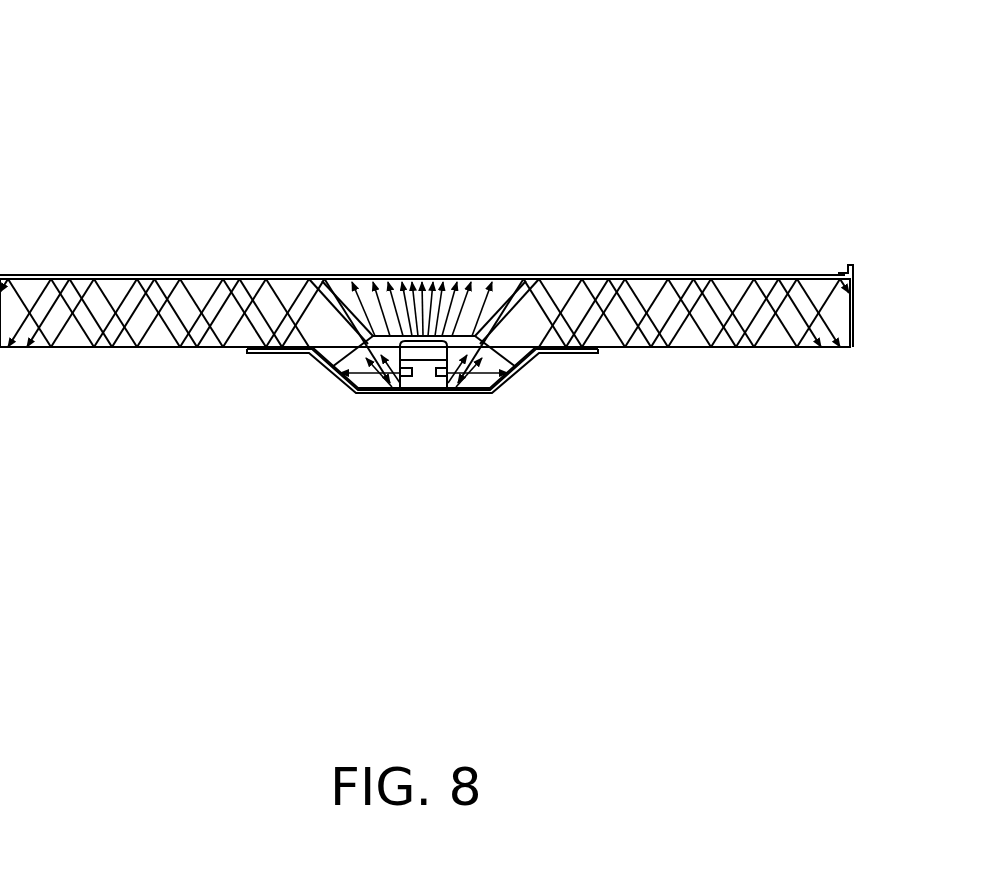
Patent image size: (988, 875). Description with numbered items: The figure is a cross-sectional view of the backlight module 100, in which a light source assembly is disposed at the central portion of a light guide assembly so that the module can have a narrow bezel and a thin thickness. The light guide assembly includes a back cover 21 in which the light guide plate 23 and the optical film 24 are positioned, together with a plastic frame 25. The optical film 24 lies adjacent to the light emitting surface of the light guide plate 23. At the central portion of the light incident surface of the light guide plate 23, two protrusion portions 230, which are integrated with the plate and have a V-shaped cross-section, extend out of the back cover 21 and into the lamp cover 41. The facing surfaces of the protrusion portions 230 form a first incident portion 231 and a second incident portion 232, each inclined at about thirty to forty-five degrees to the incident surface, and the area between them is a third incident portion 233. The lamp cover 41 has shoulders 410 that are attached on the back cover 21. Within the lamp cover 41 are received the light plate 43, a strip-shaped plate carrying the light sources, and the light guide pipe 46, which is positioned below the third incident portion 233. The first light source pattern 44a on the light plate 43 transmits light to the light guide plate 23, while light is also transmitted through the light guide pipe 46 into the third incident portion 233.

The backlight module 100 is at (226, 58).
The back cover 21 is at (778, 348).
The optical film 24 is at (702, 277).
The plastic frame 25 is at (850, 265).
The protrusion portions 230 is at (317, 360).
The shoulders 410 is at (600, 352).
The light guide plate 23 is at (527, 357).
The first incident portion 231 is at (508, 358).
The second incident portion 232 is at (332, 372).
The third incident portion 233 is at (376, 308).
The lamp cover 41 is at (472, 390).
The light plate 43 is at (410, 392).
The first light source pattern 44a is at (405, 378).
The light guide pipe 46 is at (423, 360).